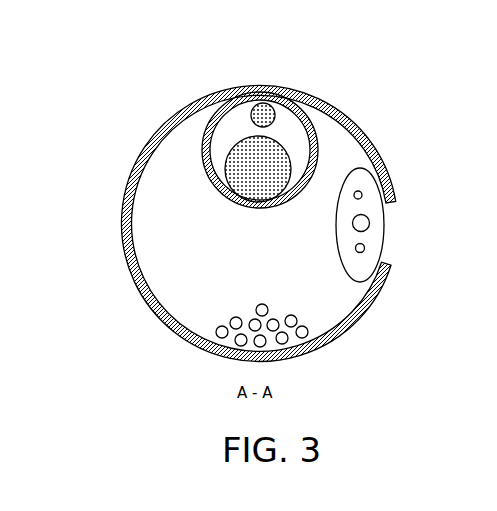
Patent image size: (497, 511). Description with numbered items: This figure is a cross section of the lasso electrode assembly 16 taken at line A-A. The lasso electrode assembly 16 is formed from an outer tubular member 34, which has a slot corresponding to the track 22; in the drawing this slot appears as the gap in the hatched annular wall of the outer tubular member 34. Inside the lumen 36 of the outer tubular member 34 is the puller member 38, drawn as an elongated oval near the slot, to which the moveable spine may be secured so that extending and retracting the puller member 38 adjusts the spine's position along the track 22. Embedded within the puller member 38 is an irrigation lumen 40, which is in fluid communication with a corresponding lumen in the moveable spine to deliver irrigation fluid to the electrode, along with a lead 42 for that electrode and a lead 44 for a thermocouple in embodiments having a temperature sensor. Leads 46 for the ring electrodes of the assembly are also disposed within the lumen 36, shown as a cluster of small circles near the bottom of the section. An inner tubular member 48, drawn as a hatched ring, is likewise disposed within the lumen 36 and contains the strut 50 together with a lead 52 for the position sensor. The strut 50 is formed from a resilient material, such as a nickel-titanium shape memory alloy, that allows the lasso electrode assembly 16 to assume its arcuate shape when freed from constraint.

The lasso electrode assembly 16 is at (98, 82).
The track 22 is at (392, 223).
The outer tubular member 34 is at (125, 181).
The lumen 36 is at (270, 265).
The puller member 38 is at (383, 259).
The irrigation lumen 40 is at (352, 224).
The lead 42 is at (353, 197).
The lead 44 is at (355, 252).
The leads 46 is at (247, 313).
The inner tubular member 48 is at (213, 188).
The strut 50 is at (243, 208).
The lead 52 is at (252, 117).